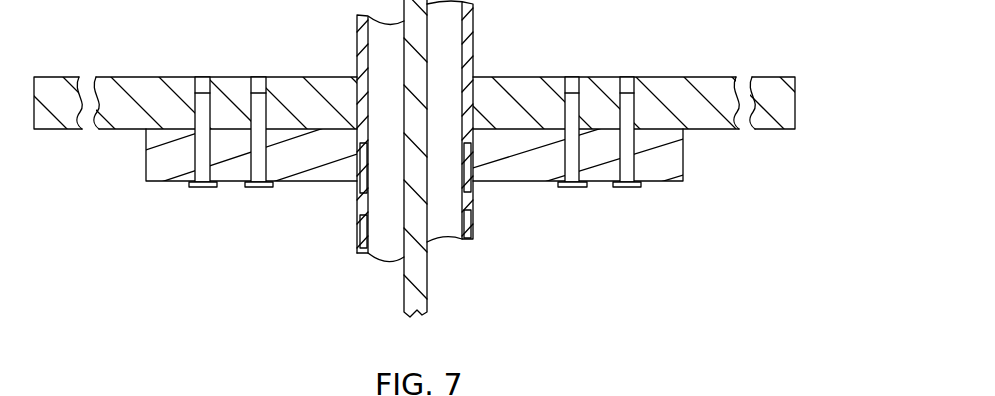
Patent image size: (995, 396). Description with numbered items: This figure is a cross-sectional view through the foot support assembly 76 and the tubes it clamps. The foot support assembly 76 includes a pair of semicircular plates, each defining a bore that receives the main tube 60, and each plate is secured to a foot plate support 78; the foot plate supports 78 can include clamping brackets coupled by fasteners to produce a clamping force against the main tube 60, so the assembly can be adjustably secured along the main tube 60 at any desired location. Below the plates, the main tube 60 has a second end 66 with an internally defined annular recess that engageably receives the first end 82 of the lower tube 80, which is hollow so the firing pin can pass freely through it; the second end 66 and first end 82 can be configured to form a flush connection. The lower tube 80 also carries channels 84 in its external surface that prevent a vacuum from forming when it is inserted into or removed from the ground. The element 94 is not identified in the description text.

The main tube 60 is at (357, 35).
The second end 66 is at (476, 174).
The foot support assembly 76 is at (140, 77).
The foot plate support 78 is at (146, 164).
The lower tube 80 is at (357, 205).
The first end 82 is at (462, 185).
The channels 84 is at (357, 241).
The conveyor component 94 is at (42, 395).